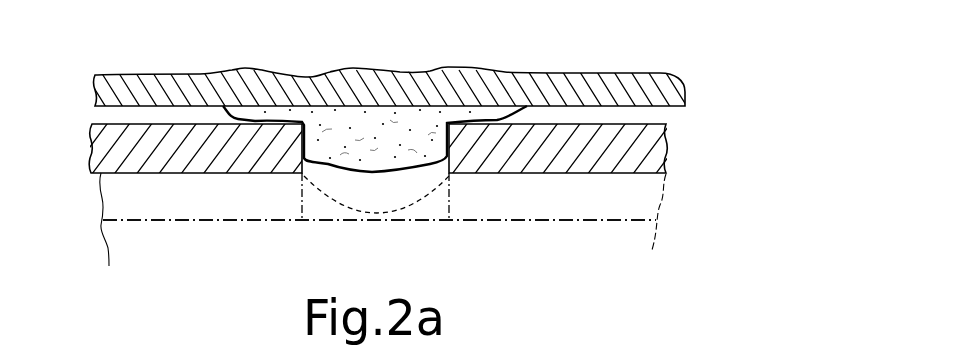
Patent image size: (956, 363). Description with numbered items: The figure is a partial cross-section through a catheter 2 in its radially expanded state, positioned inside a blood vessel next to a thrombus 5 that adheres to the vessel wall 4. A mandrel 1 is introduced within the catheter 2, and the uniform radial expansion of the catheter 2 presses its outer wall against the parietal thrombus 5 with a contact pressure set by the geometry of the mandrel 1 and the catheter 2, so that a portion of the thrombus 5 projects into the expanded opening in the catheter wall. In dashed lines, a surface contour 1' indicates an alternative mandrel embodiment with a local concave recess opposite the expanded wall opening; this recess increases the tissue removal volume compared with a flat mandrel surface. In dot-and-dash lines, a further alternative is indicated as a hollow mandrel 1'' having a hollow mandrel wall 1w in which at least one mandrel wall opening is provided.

The mandrel 1 is at (364, 220).
The hollow mandrel wall 1w is at (137, 196).
The surface contour 1' is at (376, 222).
The hollow mandrel 1'' is at (379, 258).
The catheter 2 is at (627, 147).
The vessel wall 4 is at (478, 90).
The thrombus 5 is at (369, 127).